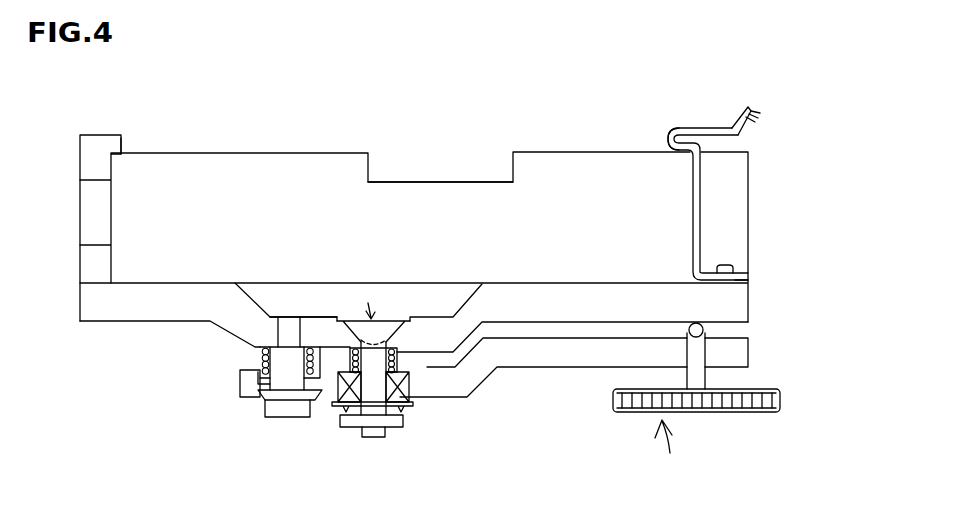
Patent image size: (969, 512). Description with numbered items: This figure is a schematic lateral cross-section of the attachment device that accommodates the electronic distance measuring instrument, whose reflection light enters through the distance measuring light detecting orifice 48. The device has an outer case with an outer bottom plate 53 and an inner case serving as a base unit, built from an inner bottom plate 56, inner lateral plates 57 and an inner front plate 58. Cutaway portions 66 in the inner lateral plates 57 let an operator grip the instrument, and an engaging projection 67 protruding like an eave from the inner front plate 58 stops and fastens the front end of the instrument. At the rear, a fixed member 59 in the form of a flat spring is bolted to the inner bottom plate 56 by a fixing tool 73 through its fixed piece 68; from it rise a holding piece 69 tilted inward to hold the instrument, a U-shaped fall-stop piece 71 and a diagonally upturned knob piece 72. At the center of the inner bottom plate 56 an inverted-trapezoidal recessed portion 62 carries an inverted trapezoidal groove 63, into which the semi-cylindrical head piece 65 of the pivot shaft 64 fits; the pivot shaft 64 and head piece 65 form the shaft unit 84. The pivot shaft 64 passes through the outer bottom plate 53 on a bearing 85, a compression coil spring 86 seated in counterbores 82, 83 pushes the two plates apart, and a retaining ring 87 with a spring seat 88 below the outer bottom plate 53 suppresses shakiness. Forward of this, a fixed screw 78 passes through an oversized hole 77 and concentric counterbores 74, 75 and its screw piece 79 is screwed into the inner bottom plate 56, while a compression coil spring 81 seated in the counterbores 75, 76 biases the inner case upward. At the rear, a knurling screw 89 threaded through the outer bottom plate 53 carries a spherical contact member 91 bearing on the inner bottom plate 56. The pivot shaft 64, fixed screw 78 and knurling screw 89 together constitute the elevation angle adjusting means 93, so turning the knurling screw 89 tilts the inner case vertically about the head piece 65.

The distance measuring light detecting orifice 48 is at (93, 210).
The outer bottom plate 53 is at (480, 387).
The inner bottom plate 56 is at (133, 322).
The inner lateral plate 57 is at (238, 153).
The inner front plate 58 is at (80, 150).
The fixed member 59 is at (755, 117).
The recessed portion 62 is at (430, 315).
The inverted trapezoidal groove 63 is at (348, 315).
The pivot shaft 64 is at (372, 439).
The head piece 65 is at (387, 318).
The cutaway portion 66 is at (450, 182).
The engaging projection 67 is at (122, 142).
The fixed piece 68 is at (743, 270).
The holding piece 69 is at (693, 202).
The fall-stop piece 71 is at (672, 130).
The knob piece 72 is at (742, 112).
The fixing tool 73 is at (728, 267).
The counterbore 74 is at (258, 402).
The counterbore 75 is at (262, 360).
The counterbore 76 is at (258, 350).
The hole 77 is at (283, 386).
The fixed screw 78 is at (277, 422).
The screw piece 79 is at (269, 346).
The compression coil spring 81 is at (323, 345).
The counterbore 82 is at (397, 361).
The counterbore 83 is at (340, 363).
The shaft unit 84 is at (382, 320).
The bearing 85 is at (408, 390).
The compression coil spring 86 is at (395, 368).
The retaining ring 87 is at (347, 428).
The spring seat 88 is at (408, 407).
The knurling screw 89 is at (727, 413).
The contact member 91 is at (702, 344).
The elevation angle adjusting means 93 is at (667, 452).